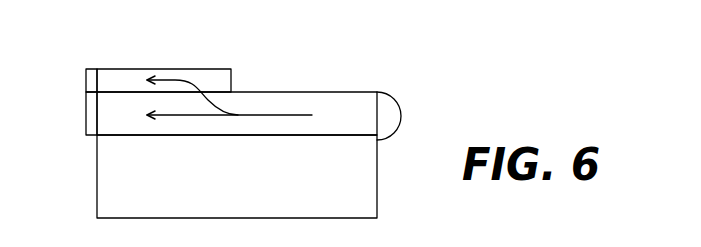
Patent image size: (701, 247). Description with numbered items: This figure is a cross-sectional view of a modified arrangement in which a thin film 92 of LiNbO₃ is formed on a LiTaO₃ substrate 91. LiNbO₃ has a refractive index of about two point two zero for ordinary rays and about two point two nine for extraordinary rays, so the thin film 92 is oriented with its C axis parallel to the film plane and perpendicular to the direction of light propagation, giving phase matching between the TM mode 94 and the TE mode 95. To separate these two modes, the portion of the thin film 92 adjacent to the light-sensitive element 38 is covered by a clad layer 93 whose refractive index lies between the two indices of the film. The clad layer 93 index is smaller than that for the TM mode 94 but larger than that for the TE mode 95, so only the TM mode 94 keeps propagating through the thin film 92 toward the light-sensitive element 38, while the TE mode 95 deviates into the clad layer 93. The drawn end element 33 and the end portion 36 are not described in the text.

The lens / rounded end 33 is at (387, 108).
The upper cladding end portion 36 is at (92, 79).
The light-sensitive element 38 is at (92, 116).
The LiTaO₃ substrate 91 is at (358, 177).
The thin film 92 is at (338, 107).
The clad layer 93 is at (222, 80).
The TM mode 94 is at (205, 117).
The TE mode 95 is at (170, 80).